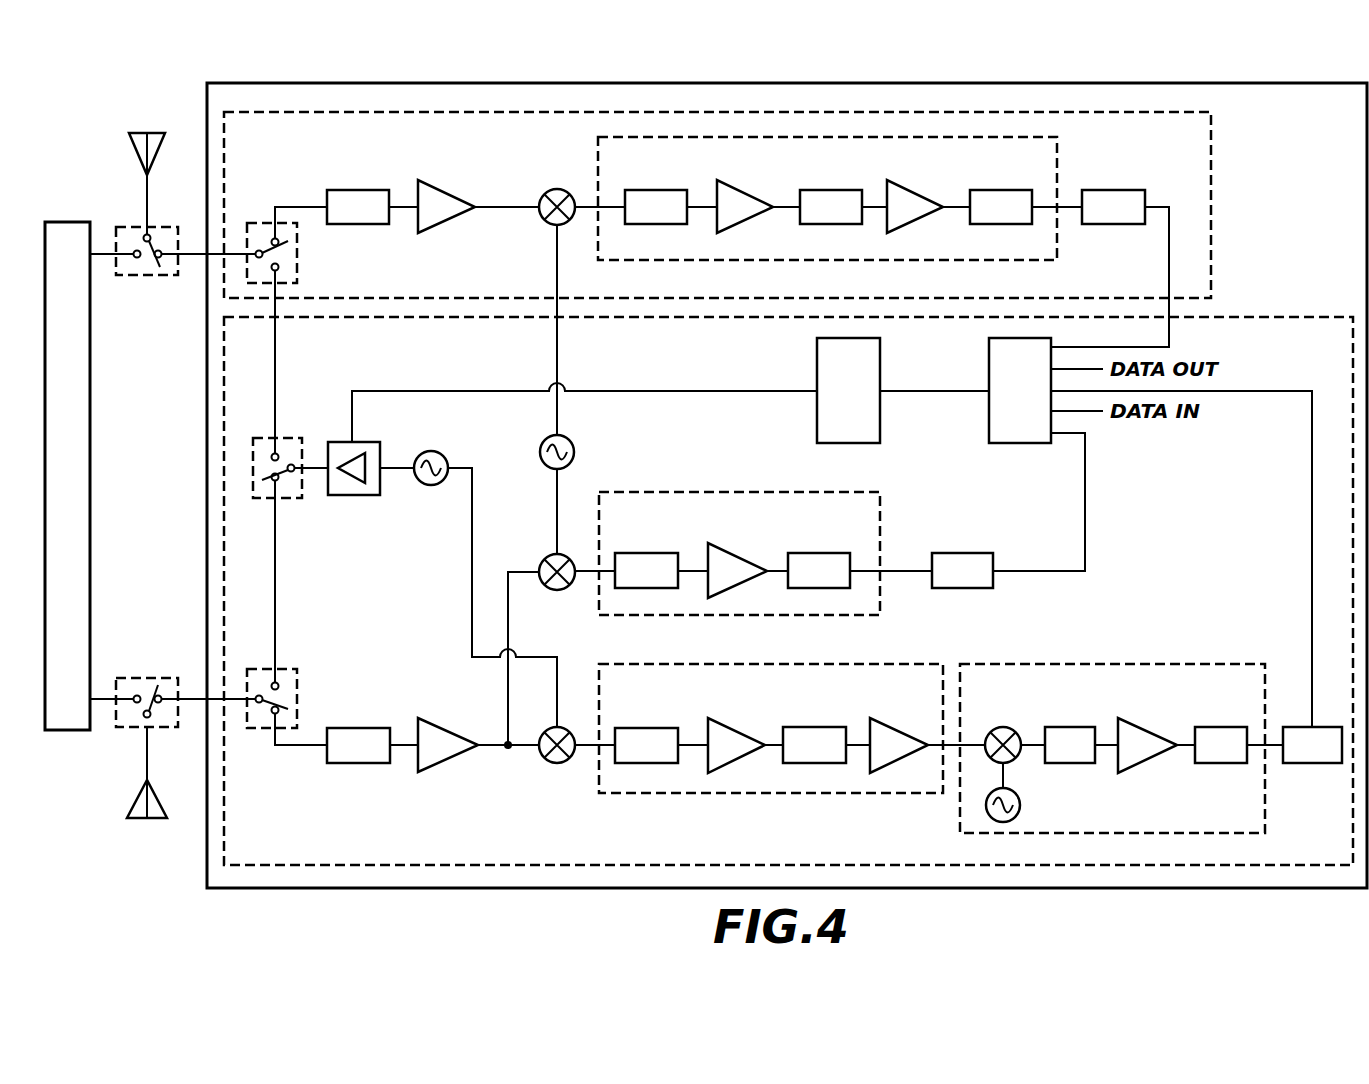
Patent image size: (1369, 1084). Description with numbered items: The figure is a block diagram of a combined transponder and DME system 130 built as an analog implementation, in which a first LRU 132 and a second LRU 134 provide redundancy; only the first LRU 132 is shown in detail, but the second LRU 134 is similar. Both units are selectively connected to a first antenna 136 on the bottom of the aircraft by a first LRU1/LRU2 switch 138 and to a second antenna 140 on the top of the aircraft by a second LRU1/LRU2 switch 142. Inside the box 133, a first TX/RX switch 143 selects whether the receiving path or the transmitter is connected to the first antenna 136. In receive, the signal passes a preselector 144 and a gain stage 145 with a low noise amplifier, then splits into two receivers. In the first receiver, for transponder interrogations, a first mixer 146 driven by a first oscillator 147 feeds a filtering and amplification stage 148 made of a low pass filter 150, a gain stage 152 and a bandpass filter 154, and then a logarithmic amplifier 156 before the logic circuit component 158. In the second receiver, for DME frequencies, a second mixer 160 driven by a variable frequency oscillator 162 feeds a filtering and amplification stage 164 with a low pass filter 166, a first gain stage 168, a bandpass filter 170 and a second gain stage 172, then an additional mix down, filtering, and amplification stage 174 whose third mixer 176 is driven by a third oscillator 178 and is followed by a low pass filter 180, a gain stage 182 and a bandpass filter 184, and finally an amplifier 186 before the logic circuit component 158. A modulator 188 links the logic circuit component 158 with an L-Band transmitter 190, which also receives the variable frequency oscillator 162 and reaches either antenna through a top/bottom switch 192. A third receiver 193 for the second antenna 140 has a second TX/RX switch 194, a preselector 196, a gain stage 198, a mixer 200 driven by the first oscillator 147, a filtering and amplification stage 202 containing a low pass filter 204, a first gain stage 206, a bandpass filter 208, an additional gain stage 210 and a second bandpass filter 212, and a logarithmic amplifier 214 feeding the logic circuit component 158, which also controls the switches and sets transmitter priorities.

The combined transponder and DME system 130 is at (105, 115).
The first LRU 132 is at (277, 888).
The box 133 is at (1315, 350).
The second LRU 134 is at (52, 492).
The first antenna 136 is at (139, 795).
The first LRU1/LRU2 switch 138 is at (134, 678).
The second antenna 140 is at (140, 160).
The second LRU1/LRU2 switch 142 is at (134, 275).
The first TX/RX switch 143 is at (297, 683).
The preselector 144 is at (343, 757).
The gain stage 145 is at (453, 757).
The first mixer 146 is at (545, 560).
The first oscillator 147 is at (574, 452).
The filtering and amplification stage 148 is at (832, 524).
The low pass filter 150 is at (631, 583).
The gain stage 152 is at (743, 583).
The bandpass filter 154 is at (804, 583).
The amplifier 156 is at (947, 583).
The logic circuit component 158 is at (1005, 403).
The second mixer 160 is at (545, 757).
The variable frequency oscillator 162 is at (444, 457).
The filtering and amplification stage 164 is at (895, 694).
The low pass filter 166 is at (631, 757).
The first gain stage 168 is at (742, 757).
The bandpass filter 170 is at (799, 757).
The second gain stage 172 is at (904, 757).
The additional mix down, filtering, and amplification stage 174 is at (1213, 694).
The third mixer 176 is at (1003, 727).
The third oscillator 178 is at (1020, 805).
The low pass filter 180 is at (1055, 757).
The gain stage 182 is at (1152, 757).
The bandpass filter 184 is at (1206, 757).
The amplifier 186 is at (1297, 757).
The modulator 188 is at (833, 403).
The transmitter 190 is at (352, 442).
The top/bottom switch 192 is at (284, 438).
The third receiver 193 is at (1168, 147).
The second TX/RX switch 194 is at (297, 262).
The preselector 196 is at (343, 219).
The gain stage 198 is at (452, 219).
The mixer 200 is at (545, 195).
The filtering and amplification stage 202 is at (1015, 170).
The low pass filter 204 is at (641, 219).
The first gain stage 206 is at (751, 219).
The bandpass filter 208 is at (816, 219).
The additional gain stage 210 is at (921, 219).
The second bandpass filter 212 is at (986, 219).
The logarithmic amplifier 214 is at (1098, 219).